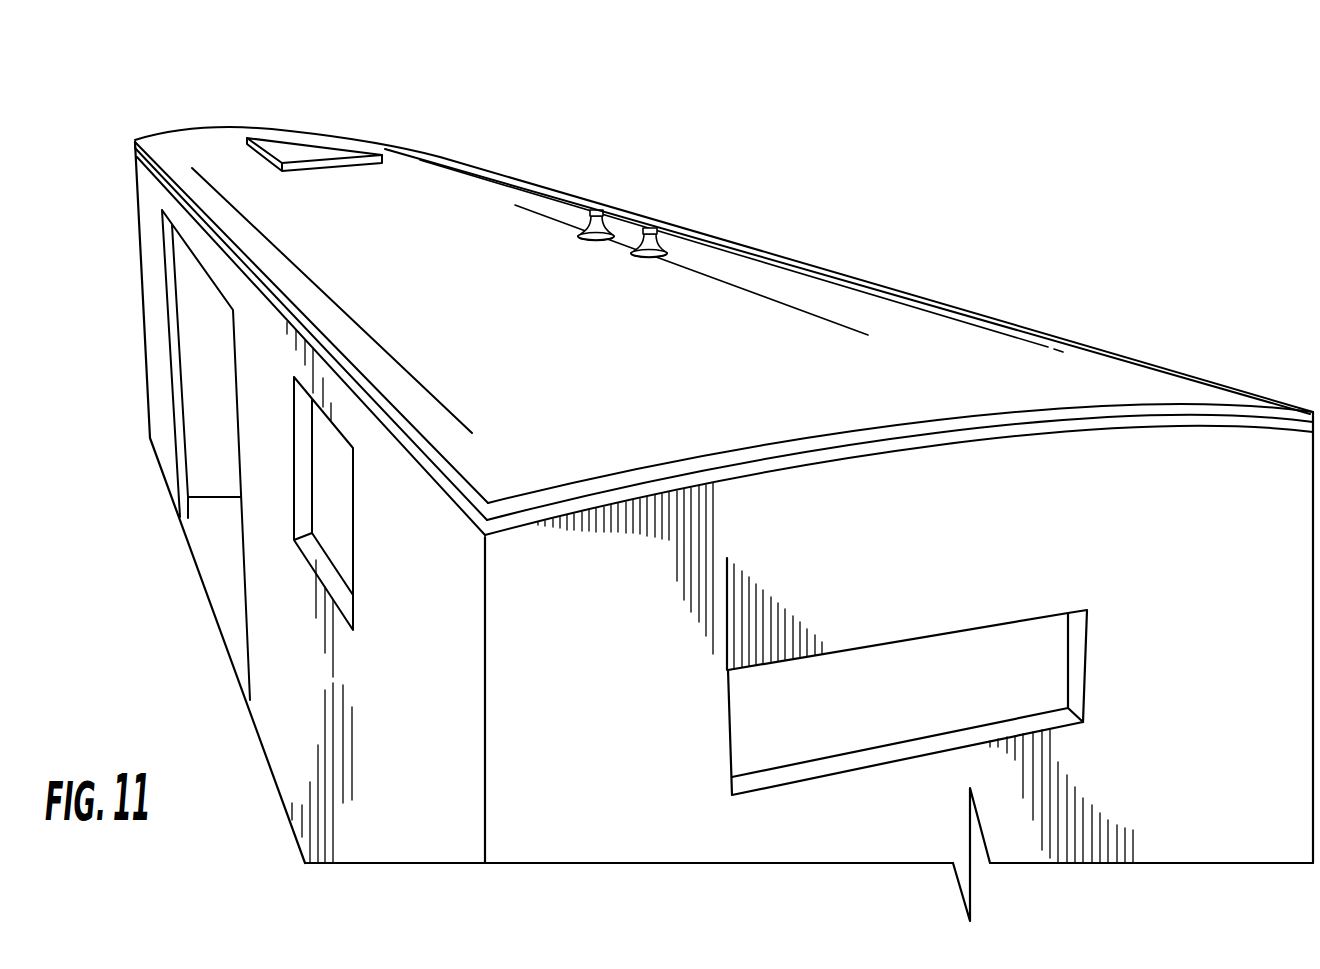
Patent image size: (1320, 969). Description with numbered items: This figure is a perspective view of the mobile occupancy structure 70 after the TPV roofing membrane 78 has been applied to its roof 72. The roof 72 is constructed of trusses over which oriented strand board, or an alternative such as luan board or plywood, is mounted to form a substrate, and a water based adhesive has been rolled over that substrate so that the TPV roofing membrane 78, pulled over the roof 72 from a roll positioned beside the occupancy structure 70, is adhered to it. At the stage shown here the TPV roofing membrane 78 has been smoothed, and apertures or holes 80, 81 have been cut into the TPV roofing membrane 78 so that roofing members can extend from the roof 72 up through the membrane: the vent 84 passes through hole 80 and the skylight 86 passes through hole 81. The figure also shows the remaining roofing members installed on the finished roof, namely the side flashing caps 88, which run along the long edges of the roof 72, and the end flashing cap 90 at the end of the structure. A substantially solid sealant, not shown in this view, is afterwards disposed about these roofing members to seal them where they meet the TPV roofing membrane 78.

The mobile occupancy structure 70 is at (285, 617).
The roof 72 is at (302, 232).
The TPV roofing membrane 78 is at (853, 300).
The aperture or hole 80 is at (640, 257).
The aperture or hole 81 is at (254, 152).
The vent 84 is at (647, 226).
The skylight 86 is at (345, 153).
The side flashing caps 88 is at (135, 148).
The end flashing cap 90 is at (1190, 413).